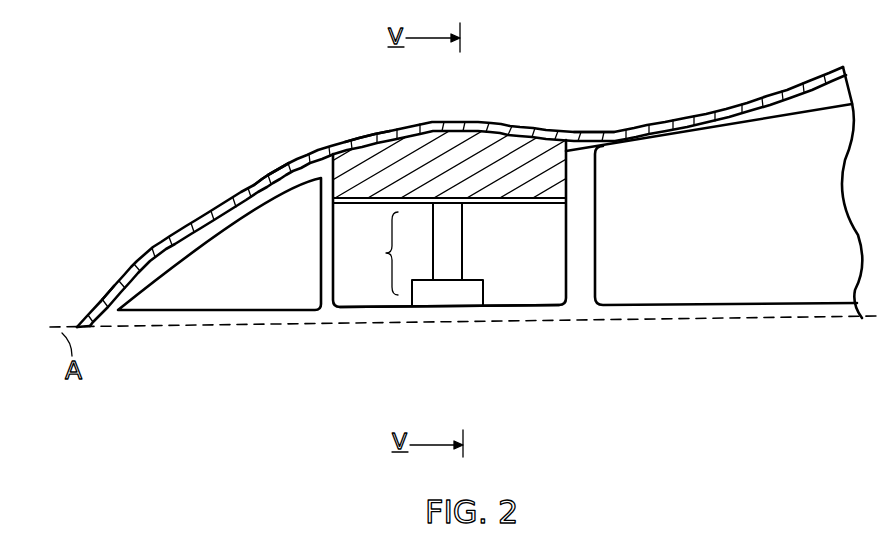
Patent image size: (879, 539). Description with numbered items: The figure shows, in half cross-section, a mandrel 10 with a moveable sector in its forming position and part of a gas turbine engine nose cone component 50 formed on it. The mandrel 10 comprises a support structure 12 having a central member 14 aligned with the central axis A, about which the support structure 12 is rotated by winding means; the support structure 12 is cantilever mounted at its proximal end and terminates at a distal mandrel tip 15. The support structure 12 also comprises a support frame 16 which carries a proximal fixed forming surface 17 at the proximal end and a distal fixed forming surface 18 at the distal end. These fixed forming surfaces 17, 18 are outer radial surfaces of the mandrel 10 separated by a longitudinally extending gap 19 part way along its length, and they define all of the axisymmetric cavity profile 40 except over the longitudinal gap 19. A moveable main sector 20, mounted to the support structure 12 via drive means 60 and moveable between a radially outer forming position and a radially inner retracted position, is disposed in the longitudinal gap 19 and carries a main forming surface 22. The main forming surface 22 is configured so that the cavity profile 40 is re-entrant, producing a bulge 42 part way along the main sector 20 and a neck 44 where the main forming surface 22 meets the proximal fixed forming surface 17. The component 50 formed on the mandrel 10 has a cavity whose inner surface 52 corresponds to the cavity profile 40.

The mandrel 10 is at (464, 359).
The support structure 12 is at (580, 292).
The central member 14 is at (408, 315).
The distal mandrel tip 15 is at (108, 320).
The support frame 16 is at (321, 232).
The proximal fixed forming surface 17 is at (703, 118).
The distal fixed forming surface 18 is at (278, 176).
The longitudinal gap 19 is at (503, 252).
The main sector 20 is at (527, 160).
The main forming surface 22 is at (437, 132).
The cavity profile 40 is at (366, 140).
The bulge 42 is at (445, 122).
The neck 44 is at (593, 130).
The component 50 is at (468, 134).
The inner surface 52 is at (748, 117).
The drive means 60 is at (385, 254).